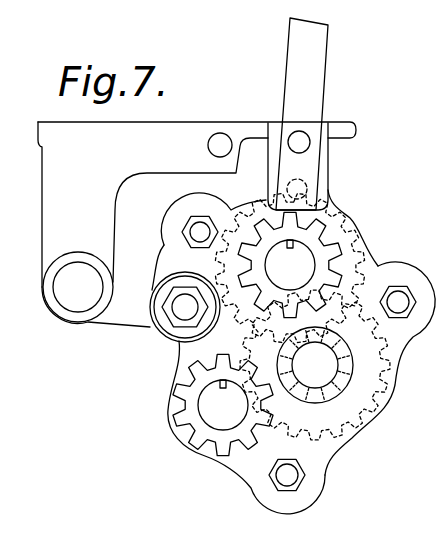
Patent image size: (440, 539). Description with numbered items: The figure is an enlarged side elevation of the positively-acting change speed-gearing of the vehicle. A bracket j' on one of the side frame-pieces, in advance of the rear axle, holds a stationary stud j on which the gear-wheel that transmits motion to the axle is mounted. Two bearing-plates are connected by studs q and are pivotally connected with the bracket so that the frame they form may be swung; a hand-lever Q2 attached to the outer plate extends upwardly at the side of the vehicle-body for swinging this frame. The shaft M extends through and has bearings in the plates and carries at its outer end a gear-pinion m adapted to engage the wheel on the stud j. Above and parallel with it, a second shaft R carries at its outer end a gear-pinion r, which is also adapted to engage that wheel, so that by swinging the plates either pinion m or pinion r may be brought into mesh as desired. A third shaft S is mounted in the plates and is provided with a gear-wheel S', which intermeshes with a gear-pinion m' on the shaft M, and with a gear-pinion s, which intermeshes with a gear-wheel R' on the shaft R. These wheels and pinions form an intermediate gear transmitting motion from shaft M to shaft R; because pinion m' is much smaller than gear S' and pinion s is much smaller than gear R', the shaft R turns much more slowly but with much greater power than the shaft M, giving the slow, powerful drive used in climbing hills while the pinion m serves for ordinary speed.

The bracket j' is at (197, 224).
The stationary stud or axle j is at (78, 287).
The hand-lever Q2 is at (302, 114).
The gear-wheel S' is at (293, 352).
The gear-wheel R' is at (295, 267).
The second shaft R is at (290, 264).
The gear-pinion r is at (322, 253).
The third shaft S is at (315, 365).
The gear-pinion s is at (361, 340).
The shaft M is at (223, 404).
The gear-pinion m is at (166, 454).
The gear-pinion m' is at (205, 474).
The studs q is at (194, 229).